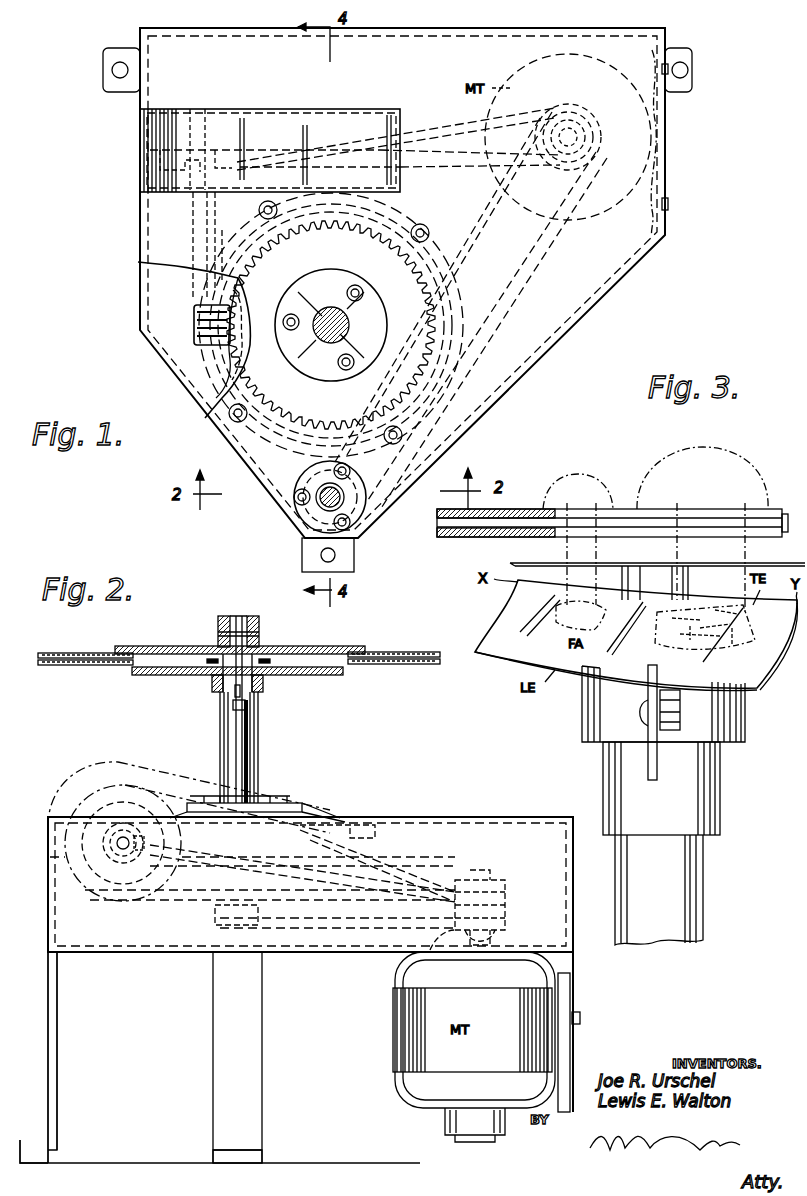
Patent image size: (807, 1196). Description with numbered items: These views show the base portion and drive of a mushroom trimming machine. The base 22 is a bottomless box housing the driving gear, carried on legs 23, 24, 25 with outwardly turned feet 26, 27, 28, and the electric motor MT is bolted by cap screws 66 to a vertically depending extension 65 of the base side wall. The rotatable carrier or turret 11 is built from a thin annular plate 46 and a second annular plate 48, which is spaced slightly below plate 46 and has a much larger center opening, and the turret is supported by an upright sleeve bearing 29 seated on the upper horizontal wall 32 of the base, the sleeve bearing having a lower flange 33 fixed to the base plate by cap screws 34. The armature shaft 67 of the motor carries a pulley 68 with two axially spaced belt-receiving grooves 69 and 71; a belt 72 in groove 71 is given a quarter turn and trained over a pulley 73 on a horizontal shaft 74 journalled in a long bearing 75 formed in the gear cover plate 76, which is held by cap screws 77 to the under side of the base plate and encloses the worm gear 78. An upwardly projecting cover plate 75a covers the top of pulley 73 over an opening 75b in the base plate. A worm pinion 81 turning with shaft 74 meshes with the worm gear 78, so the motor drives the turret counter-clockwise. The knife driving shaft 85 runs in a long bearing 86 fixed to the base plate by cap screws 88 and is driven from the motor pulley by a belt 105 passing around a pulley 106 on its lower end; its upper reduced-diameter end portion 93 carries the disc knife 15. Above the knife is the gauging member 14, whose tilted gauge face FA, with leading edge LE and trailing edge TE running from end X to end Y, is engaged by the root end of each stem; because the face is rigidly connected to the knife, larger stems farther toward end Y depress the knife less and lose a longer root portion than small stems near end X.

In FIG. 2, the rotatable carrier or turret 11 is at (328, 640).
In FIG. 3, the gauging member 14 is at (497, 621).
In FIG. 3, the disc knife 15 is at (522, 564).
In FIG. 2, the base 22 is at (518, 800).
In FIG. 2, the leg 23 is at (57, 1069).
In FIG. 2, the leg 24 is at (220, 1067).
In FIG. 2, the leg 25 is at (572, 1093).
In FIG. 1, the foot 26 is at (103, 72).
In FIG. 2, the foot 26 is at (30, 1150).
In FIG. 1, the foot 27 is at (352, 560).
In FIG. 2, the foot 27 is at (262, 1160).
In FIG. 1, the foot 28 is at (692, 72).
In FIG. 1, the upright sleeve bearing 29 is at (350, 322).
In FIG. 2, the upright sleeve bearing 29 is at (259, 730).
In FIG. 1, the upper horizontal wall 32 is at (540, 345).
In FIG. 1, the flange 33 is at (331, 325).
In FIG. 1, the cap screws 34 is at (284, 317).
In FIG. 2, the thin annular plate 46 is at (60, 652).
In FIG. 2, the second annular plate 48 is at (85, 662).
In FIG. 2, the vertically depending extension 65 is at (570, 988).
In FIG. 1, the cap screws 66 is at (668, 76).
In FIG. 2, the cap screws 66 is at (582, 1018).
In FIG. 1, the armature shaft 67 is at (578, 138).
In FIG. 2, the armature shaft 67 is at (482, 880).
In FIG. 2, the pulley 68 is at (505, 890).
In FIG. 2, the belt-receiving groove 69 is at (505, 925).
In FIG. 2, the belt-receiving groove 71 is at (505, 905).
In FIG. 2, the belt 72 is at (440, 886).
In FIG. 1, the pulley 73 is at (186, 150).
In FIG. 2, the pulley 73 is at (105, 800).
In FIG. 1, the horizontal shaft 74 is at (212, 239).
In FIG. 2, the horizontal shaft 74 is at (118, 830).
In FIG. 1, the long bearing 75 is at (198, 213).
In FIG. 1, the cover plate 75a is at (386, 115).
In FIG. 2, the cover plate 75a is at (150, 792).
In FIG. 1, the opening 75b is at (338, 109).
In FIG. 2, the gear cover plate 76 is at (370, 838).
In FIG. 1, the cap screws 77 is at (262, 210).
In FIG. 1, the worm gear 78 is at (242, 366).
In FIG. 2, the worm gear 78 is at (200, 868).
In FIG. 1, the worm pinion 81 is at (194, 322).
In FIG. 2, the worm pinion 81 is at (115, 845).
In FIG. 2, the shaft 85 is at (250, 706).
In FIG. 2, the long bearing 86 is at (240, 754).
In FIG. 1, the cap screws 88 is at (297, 505).
In FIG. 2, the cap screws 88 is at (256, 800).
In FIG. 2, the upper reduced-diameter end portion 93 is at (235, 697).
In FIG. 1, the belt 105 is at (504, 287).
In FIG. 2, the belt 105 is at (380, 918).
In FIG. 2, the pulley 106 is at (215, 912).